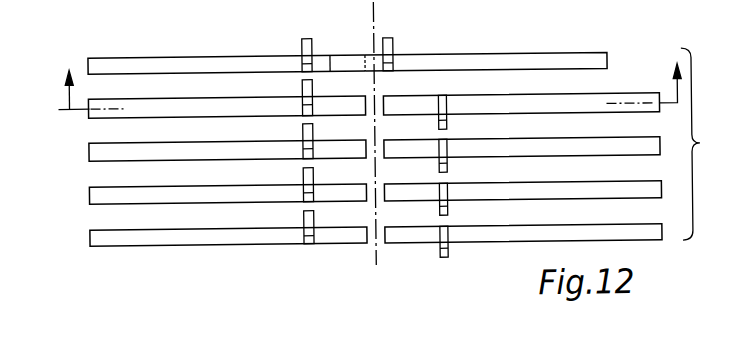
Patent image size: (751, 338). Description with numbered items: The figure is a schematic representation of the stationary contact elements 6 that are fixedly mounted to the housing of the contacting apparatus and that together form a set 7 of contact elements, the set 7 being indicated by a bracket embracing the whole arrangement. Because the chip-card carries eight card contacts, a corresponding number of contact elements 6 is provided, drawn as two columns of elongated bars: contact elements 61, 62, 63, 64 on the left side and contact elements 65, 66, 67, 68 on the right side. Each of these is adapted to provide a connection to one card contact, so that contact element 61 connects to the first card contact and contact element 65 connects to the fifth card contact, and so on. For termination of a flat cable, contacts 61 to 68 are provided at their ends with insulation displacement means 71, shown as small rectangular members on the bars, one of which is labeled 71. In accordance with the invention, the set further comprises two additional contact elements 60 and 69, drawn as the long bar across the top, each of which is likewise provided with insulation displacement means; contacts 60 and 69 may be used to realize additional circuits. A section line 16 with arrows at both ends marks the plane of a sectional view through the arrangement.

The contact elements 6 is at (701, 144).
The set of contact elements 7 is at (659, 40).
The section line 16- 16 is at (369, 73).
The additional contact element 60 is at (521, 57).
The contact element 61 is at (185, 104).
The contact element 62 is at (185, 153).
The contact element 63 is at (185, 198).
The contact element 64 is at (185, 241).
The contact element 65 is at (521, 105).
The contact element 66 is at (521, 150).
The contact element 67 is at (521, 195).
The contact element 68 is at (521, 238).
The additional contact element 69 is at (171, 57).
The insulation displacement means 71 is at (448, 256).